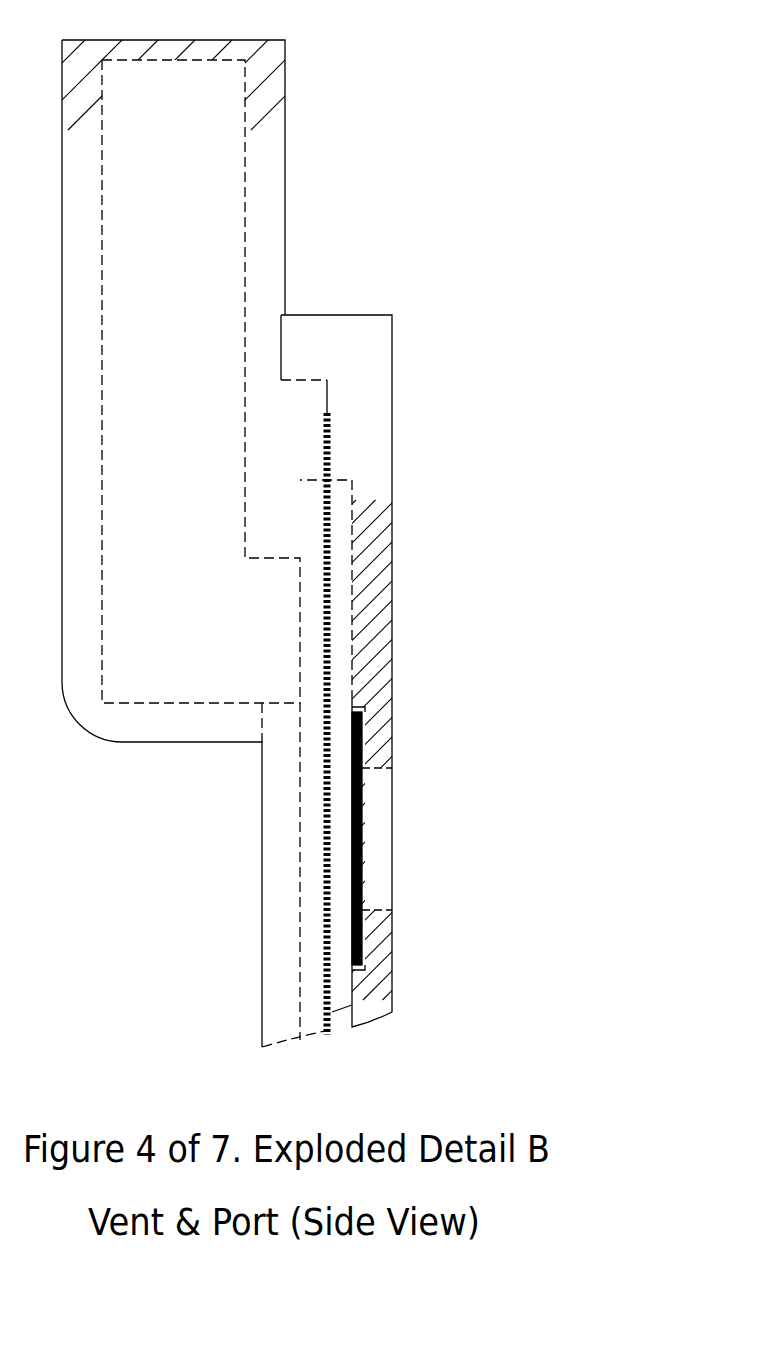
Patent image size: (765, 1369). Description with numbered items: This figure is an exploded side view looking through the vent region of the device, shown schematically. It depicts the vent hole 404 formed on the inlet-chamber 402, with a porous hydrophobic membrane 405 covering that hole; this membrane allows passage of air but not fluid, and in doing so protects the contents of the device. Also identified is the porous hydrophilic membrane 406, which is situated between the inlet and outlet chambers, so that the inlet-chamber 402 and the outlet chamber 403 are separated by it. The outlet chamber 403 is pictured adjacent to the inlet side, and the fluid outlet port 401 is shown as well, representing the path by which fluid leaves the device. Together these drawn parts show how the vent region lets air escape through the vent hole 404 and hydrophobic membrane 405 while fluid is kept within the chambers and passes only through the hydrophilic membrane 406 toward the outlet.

The fluid outlet port 401 is at (382, 523).
The inlet-chamber 402 is at (382, 671).
The outlet chamber 403 is at (227, 724).
The vent hole 404 is at (438, 814).
The porous hydrophobic membrane 405 is at (416, 838).
The porous hydrophilic membrane 406 is at (414, 1023).